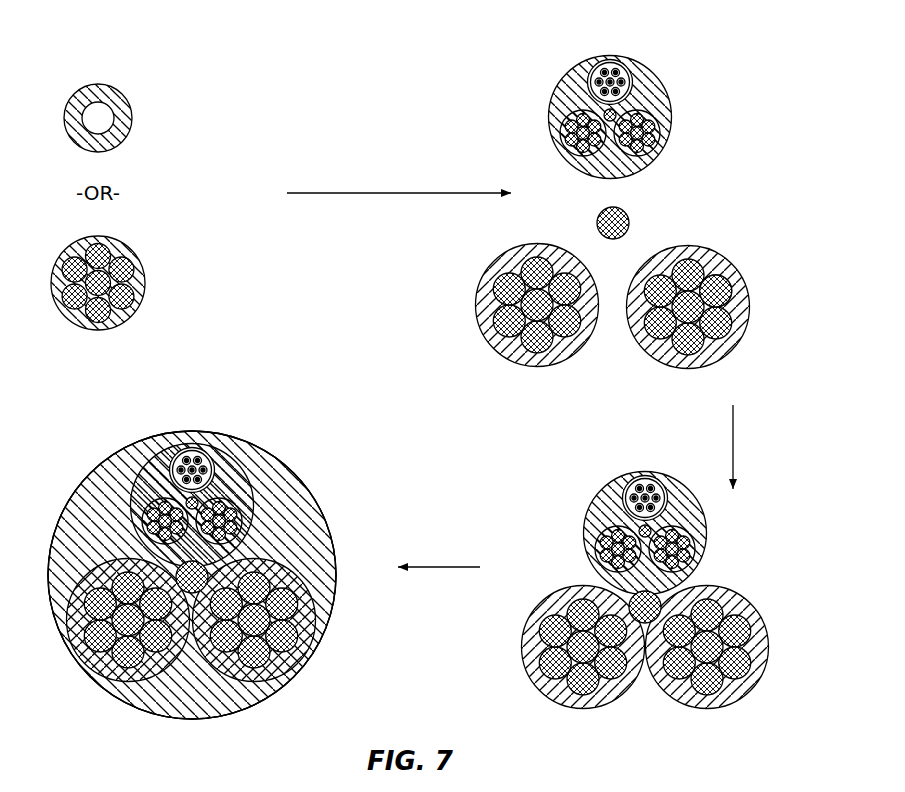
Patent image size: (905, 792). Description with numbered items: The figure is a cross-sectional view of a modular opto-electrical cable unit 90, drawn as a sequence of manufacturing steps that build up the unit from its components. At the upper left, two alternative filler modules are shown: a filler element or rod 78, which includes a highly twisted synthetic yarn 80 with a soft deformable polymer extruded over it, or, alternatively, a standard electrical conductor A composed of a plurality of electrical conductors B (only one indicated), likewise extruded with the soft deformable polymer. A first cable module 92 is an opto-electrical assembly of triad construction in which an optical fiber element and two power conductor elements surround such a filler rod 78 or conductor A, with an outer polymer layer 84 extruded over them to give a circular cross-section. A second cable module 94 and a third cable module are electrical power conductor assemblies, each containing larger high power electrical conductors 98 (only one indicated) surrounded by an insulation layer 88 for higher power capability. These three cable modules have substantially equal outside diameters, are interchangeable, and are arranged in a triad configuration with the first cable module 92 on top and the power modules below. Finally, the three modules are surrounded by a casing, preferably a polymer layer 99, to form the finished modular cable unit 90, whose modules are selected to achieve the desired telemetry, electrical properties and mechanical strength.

The filler element or rod 78 is at (132, 100).
The highly twisted synthetic yarn 80 is at (108, 124).
The electrical conductor A is at (128, 264).
The electrical conductors B is at (136, 299).
The first cable module 92 is at (643, 50).
The second cable module 94 is at (560, 372).
The high power electrical conductor 98 is at (731, 290).
The modular opto-electrical cable unit 90 is at (220, 558).
The outer polymer layer 84 is at (272, 473).
The polymer layer 99 is at (325, 515).
The insulation layer 88 is at (215, 703).